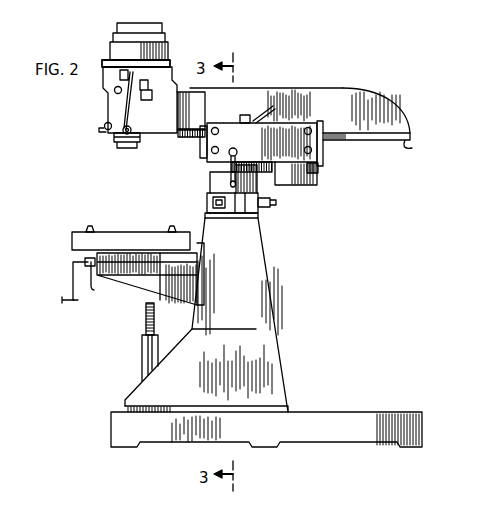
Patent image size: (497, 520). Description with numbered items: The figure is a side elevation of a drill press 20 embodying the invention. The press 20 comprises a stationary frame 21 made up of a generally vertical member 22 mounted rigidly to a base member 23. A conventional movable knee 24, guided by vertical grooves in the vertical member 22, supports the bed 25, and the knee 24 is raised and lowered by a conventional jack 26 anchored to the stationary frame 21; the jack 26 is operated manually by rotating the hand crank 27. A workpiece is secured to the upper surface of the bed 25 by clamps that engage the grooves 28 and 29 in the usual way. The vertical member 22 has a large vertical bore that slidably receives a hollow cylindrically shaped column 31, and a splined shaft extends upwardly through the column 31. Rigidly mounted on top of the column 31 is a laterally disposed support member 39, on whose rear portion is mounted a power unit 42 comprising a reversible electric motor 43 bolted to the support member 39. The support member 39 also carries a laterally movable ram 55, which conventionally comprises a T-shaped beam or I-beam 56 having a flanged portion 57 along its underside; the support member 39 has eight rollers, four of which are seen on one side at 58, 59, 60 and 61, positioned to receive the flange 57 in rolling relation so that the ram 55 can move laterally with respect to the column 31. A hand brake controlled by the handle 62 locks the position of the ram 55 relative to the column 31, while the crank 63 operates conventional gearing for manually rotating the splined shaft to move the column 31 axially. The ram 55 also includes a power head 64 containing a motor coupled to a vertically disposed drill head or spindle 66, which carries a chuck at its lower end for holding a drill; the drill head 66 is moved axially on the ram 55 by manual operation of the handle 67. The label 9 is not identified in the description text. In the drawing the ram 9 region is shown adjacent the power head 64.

The ram 9 is at (194, 112).
The drill press 20 is at (290, 262).
The stationary frame 21 is at (136, 388).
The vertical member 22 is at (246, 301).
The base member 23 is at (345, 412).
The movable knee 24 is at (140, 280).
The bed 25 is at (123, 238).
The jack 26 is at (143, 331).
The hand crank 27 is at (70, 303).
The groove 28 is at (91, 226).
The groove 29 is at (172, 226).
The column 31 is at (241, 189).
The support member 39 is at (258, 172).
The power unit 42 is at (290, 184).
The reversible electric motor 43 is at (320, 167).
The ram 55 is at (282, 88).
The I-beam 56 is at (385, 115).
The flanged portion 57 is at (412, 142).
The roller 58 is at (213, 128).
The roller 59 is at (311, 127).
The roller 60 is at (207, 155).
The roller 61 is at (322, 152).
The handle 62 is at (241, 115).
The crank 63 is at (236, 151).
The power head 64 is at (167, 80).
The drill head 66 is at (114, 150).
The handle 67 is at (132, 131).